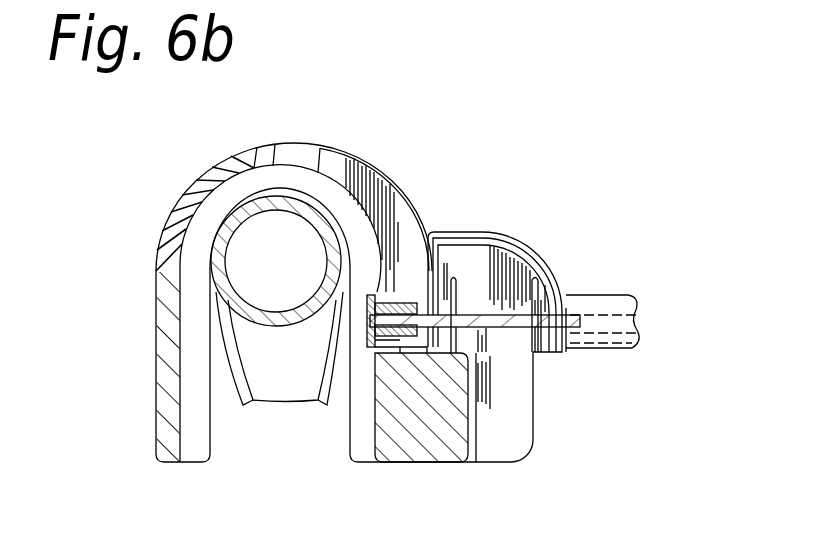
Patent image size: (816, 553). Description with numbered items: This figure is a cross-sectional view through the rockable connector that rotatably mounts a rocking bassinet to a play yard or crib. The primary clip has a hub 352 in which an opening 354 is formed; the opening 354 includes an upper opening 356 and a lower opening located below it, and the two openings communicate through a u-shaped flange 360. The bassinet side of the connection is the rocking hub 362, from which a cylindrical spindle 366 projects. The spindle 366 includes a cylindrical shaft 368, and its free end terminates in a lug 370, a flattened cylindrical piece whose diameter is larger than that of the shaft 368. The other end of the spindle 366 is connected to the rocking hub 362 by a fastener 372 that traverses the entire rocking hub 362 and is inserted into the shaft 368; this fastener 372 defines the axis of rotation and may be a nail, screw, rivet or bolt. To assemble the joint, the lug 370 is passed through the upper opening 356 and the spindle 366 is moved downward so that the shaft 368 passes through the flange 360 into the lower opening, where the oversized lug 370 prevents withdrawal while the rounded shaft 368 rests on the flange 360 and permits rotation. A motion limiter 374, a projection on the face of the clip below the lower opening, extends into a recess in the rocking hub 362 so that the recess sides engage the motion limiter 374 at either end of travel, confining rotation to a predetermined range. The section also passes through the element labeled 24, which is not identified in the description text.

The bushing 24 is at (286, 285).
The hub 352 is at (157, 232).
The opening 354 is at (295, 143).
The upper opening 356 is at (313, 150).
The u-shaped flange 360 is at (400, 207).
The rocking hub 362 is at (523, 240).
The cylindrical spindle 366 is at (430, 230).
The cylindrical shaft 368 is at (483, 230).
The lug 370 is at (383, 302).
The fastener 372 is at (580, 313).
The motion limiter 374 is at (445, 450).